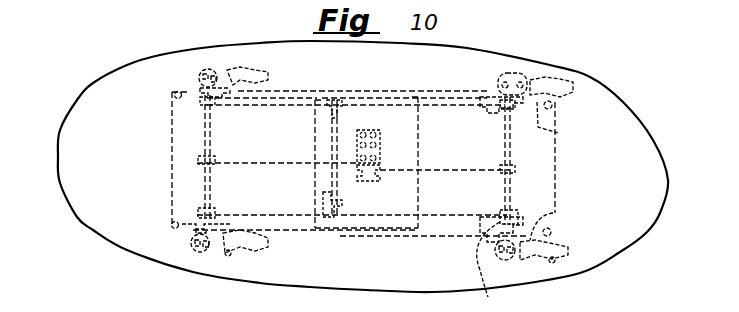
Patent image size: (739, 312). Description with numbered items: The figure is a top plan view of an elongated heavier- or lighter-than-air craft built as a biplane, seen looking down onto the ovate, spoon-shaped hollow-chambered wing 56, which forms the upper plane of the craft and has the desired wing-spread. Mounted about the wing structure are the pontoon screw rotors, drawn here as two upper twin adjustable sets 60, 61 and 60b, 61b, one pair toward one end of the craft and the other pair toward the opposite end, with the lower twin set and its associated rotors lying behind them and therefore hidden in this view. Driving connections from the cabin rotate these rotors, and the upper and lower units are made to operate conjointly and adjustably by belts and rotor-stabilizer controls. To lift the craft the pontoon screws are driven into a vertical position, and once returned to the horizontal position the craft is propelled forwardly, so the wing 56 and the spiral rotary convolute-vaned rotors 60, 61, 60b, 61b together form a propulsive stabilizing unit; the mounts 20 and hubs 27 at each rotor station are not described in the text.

The hollow-chambered wing 56 is at (638, 133).
The wheel assembly 20 is at (197, 75).
The wheel mounting bracket / hub 27 is at (233, 90).
The pontoon screw rotor 60 is at (238, 252).
The pontoon screw rotor 60b is at (240, 72).
The pontoon screw rotor 61 is at (552, 262).
The pontoon screw rotor 61b is at (555, 83).